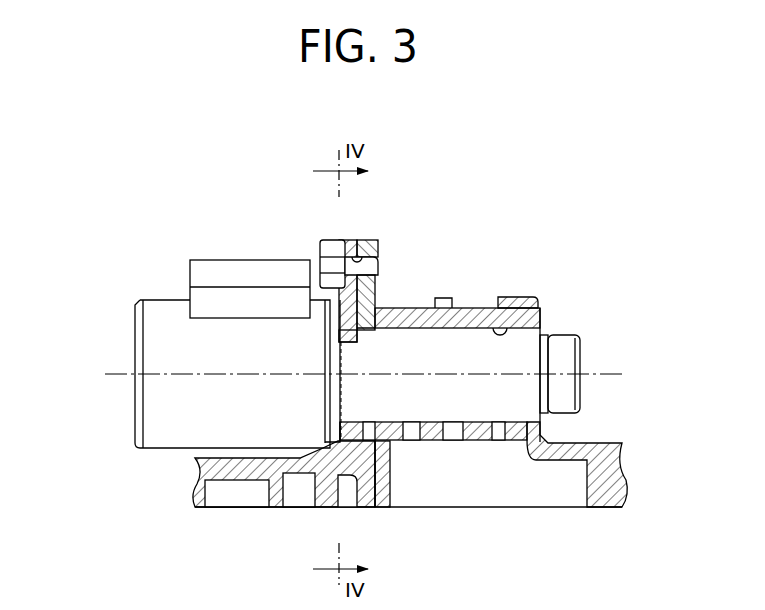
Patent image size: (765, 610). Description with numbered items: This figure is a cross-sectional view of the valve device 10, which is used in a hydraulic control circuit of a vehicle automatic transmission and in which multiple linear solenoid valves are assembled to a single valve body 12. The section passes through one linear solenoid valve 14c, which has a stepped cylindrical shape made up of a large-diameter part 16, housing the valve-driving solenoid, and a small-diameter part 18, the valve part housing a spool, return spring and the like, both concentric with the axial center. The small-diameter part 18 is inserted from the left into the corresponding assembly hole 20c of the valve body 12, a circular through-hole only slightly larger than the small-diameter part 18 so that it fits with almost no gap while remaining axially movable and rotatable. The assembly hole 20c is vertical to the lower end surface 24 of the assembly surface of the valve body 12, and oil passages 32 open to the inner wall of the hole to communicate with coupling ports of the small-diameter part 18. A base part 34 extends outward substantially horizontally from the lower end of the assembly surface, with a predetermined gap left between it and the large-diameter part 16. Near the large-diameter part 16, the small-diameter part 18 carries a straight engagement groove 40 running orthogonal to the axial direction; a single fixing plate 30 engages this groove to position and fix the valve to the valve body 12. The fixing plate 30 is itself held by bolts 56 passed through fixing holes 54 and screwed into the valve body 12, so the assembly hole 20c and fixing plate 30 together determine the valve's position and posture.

The valve device 10 is at (547, 187).
The valve body 12 is at (638, 470).
The linear solenoid valve 14c is at (122, 290).
The large-diameter part 16 is at (162, 425).
The small-diameter part 18 is at (460, 350).
The assembly hole 20c is at (513, 300).
The lower end surface 24 is at (310, 460).
The fixing plate 30 is at (338, 302).
The oil passages 32 is at (410, 432).
The base part 34 is at (245, 465).
The engagement groove 40 is at (369, 320).
The fixing holes 54 is at (365, 250).
The bolts 56 is at (332, 250).